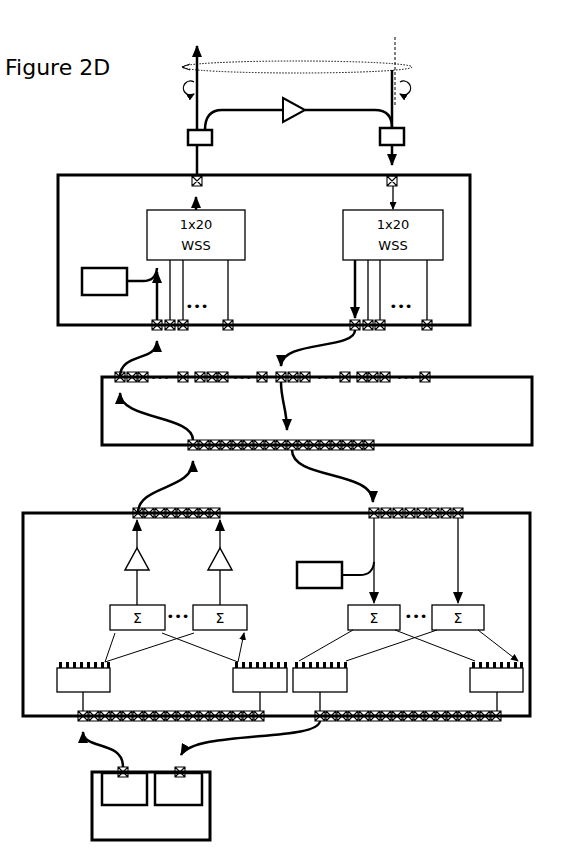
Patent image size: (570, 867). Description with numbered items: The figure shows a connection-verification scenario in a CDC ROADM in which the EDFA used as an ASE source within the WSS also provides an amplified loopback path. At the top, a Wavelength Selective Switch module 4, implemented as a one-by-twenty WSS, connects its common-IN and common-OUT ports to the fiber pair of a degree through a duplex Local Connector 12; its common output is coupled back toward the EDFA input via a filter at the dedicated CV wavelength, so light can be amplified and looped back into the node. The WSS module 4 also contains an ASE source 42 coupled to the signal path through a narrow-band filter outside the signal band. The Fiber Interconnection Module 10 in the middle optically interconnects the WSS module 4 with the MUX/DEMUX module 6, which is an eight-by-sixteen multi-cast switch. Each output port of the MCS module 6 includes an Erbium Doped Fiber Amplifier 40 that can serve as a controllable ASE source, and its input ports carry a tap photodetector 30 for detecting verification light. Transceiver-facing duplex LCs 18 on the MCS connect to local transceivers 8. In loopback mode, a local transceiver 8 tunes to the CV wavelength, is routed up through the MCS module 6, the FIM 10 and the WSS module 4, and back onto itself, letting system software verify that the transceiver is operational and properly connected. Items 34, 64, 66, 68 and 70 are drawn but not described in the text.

The Wavelength Selective Switch (WSS) module 4 is at (58, 195).
The MUX/DEMUX module (MCS) 6 is at (493, 513).
The transceiver 8 is at (92, 828).
The Fiber Interconnection Module (FIM) 10 is at (515, 418).
The duplex Local Connector (LC) 12 is at (192, 176).
The transceiver-facing duplex LC 18 is at (176, 751).
The photodetector (PD) 30 is at (297, 574).
The 8x1 switch 34 is at (110, 678).
The Erbium Doped Fiber Amplifier (EDFA) 40 is at (125, 560).
The ASE source 42 is at (102, 295).
The amplifier 64 is at (292, 118).
The ingress block 66 is at (404, 137).
The egress block 68 is at (188, 137).
The fiber loop 70 is at (333, 93).